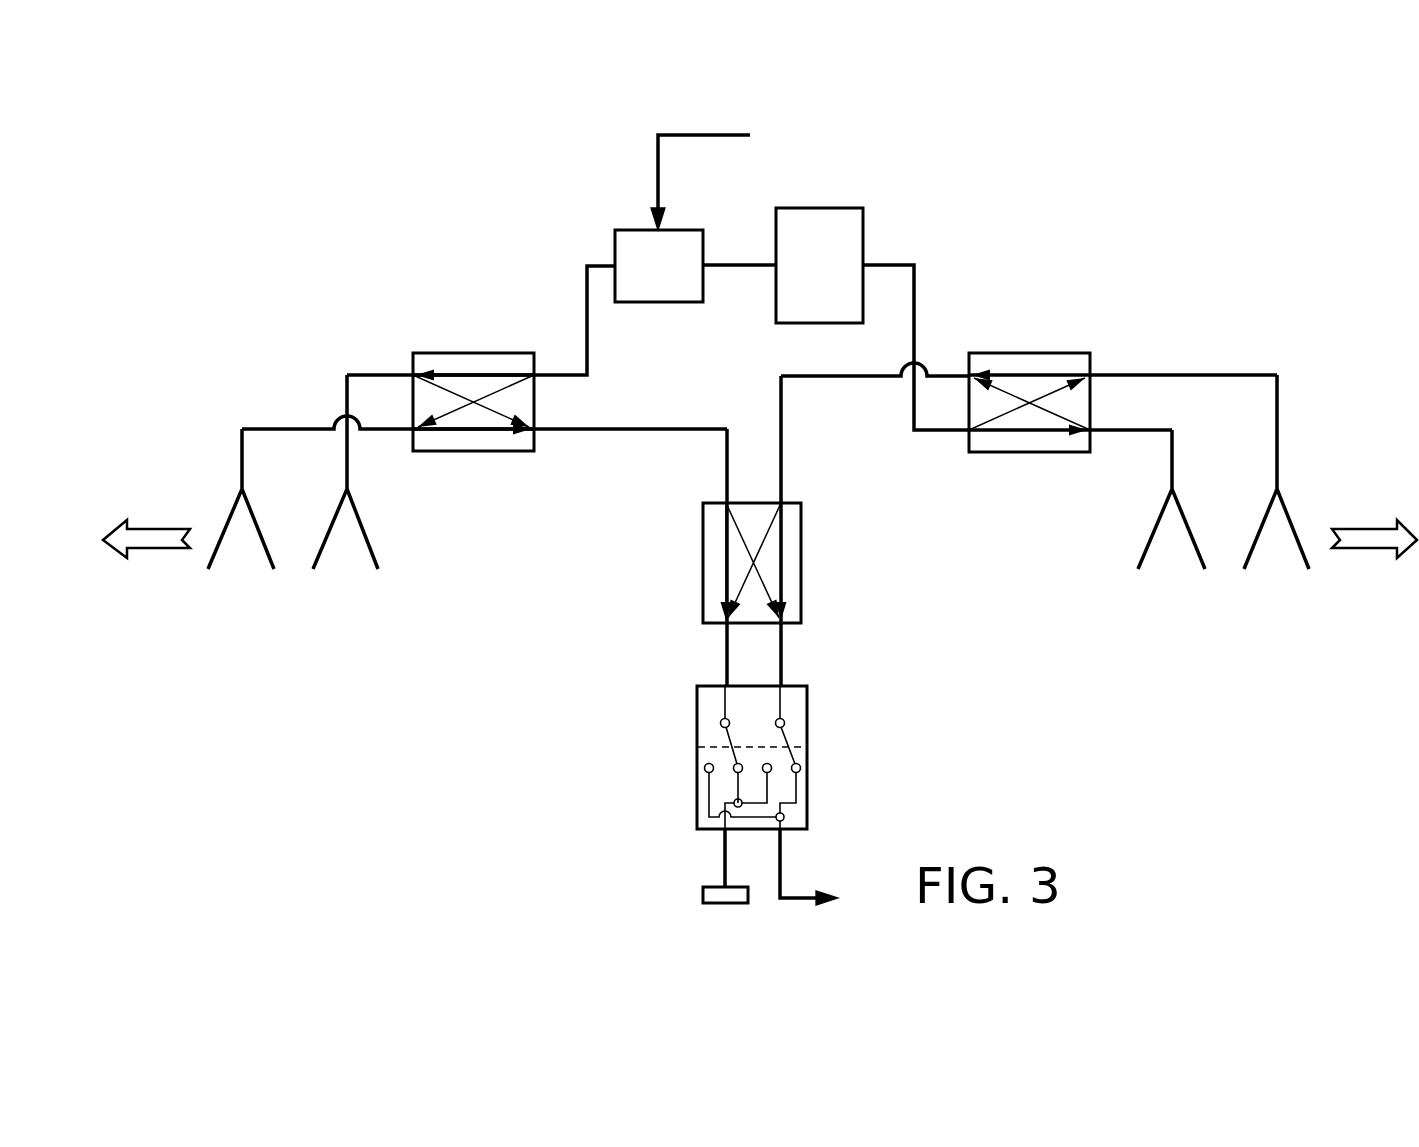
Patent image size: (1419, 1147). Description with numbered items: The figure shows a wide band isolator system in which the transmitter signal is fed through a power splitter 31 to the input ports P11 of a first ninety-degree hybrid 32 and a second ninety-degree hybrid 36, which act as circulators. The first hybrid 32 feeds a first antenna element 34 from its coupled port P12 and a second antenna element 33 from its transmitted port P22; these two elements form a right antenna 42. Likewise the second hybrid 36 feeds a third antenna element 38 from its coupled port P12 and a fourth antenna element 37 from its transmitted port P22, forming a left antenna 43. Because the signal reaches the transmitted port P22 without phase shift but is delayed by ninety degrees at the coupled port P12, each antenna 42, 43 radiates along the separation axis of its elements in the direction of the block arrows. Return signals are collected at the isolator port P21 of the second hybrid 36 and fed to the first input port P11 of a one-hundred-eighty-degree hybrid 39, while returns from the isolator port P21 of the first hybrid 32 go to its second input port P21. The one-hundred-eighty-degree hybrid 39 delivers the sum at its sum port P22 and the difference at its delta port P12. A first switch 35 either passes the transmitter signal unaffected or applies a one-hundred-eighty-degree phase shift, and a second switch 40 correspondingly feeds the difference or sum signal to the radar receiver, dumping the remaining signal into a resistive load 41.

The power splitter 31 is at (615, 240).
The first 90-degree hybrid 32 is at (462, 353).
The second antenna element 33 is at (226, 552).
The first antenna element 34 is at (384, 552).
The first switch 35 is at (822, 208).
The second 90-degree hybrid 36 is at (1018, 353).
The fourth antenna element 37 is at (1316, 552).
The third antenna element 38 is at (1156, 552).
The 180-degree hybrid 39 is at (801, 567).
The second switch 40 is at (807, 763).
The resistive load 41 is at (703, 897).
The right antenna 42 is at (252, 630).
The left antenna 43 is at (1268, 630).
The input port P11 is at (534, 375).
The coupled port P12 is at (413, 375).
The isolator port P21 is at (534, 430).
The transmitted port P22 is at (413, 430).